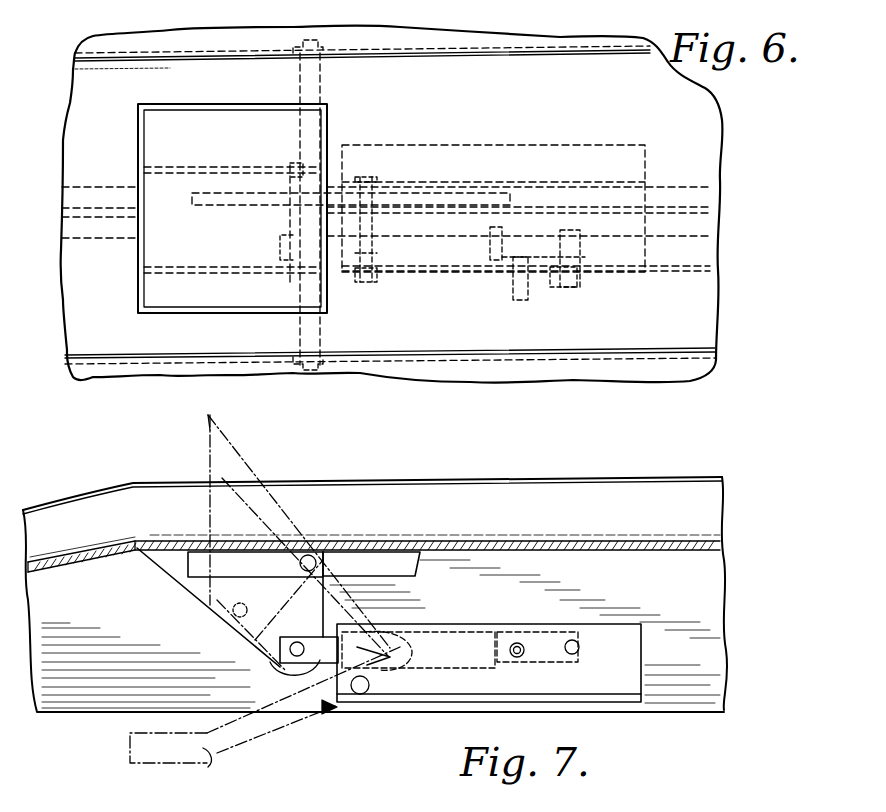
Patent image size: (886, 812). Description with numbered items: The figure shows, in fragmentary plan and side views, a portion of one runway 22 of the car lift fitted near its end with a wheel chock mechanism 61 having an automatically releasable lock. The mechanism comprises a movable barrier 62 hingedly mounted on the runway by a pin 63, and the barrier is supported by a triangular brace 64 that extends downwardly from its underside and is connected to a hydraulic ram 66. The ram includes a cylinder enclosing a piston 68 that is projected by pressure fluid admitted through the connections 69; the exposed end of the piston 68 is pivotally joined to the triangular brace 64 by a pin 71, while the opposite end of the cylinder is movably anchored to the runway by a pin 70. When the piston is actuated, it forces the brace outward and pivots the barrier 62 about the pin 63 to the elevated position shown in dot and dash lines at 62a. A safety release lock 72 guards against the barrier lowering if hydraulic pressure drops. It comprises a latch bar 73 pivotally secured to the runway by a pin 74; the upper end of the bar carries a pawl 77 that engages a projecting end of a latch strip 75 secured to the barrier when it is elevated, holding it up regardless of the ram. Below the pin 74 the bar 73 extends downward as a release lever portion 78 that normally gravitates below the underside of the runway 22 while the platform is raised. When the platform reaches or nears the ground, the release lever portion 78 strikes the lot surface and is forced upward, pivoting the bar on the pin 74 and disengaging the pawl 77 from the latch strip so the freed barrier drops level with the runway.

In FIG. 6, the runway 22 is at (490, 338).
In FIG. 7, the runway 22 is at (560, 540).
In FIG. 6, the wheel chock mechanism 61 is at (277, 324).
In FIG. 7, the wheel chock mechanism 61 is at (157, 572).
In FIG. 6, the movable barrier 62 is at (210, 120).
In FIG. 7, the movable barrier 62 is at (228, 547).
In FIG. 7, the elevated position of barrier 62a is at (245, 453).
In FIG. 6, the pin 63 is at (323, 80).
In FIG. 7, the pin 63 is at (315, 556).
In FIG. 7, the triangular brace 64 is at (203, 598).
In FIG. 6, the hydraulic ram 66 is at (423, 267).
In FIG. 6, the piston 68 is at (330, 260).
In FIG. 7, the piston 68 is at (460, 628).
In FIG. 6, the connections 69 is at (528, 290).
In FIG. 7, the connections 69 is at (525, 643).
In FIG. 6, the pin 70 is at (573, 257).
In FIG. 7, the pin 70 is at (580, 652).
In FIG. 6, the pin 71 is at (280, 245).
In FIG. 7, the pin 71 is at (283, 665).
In FIG. 7, the safety release lock 72 is at (278, 730).
In FIG. 7, the latch bar 73 is at (337, 722).
In FIG. 6, the pin 74 is at (372, 178).
In FIG. 7, the pin 74 is at (370, 685).
In FIG. 7, the latch strip 75 is at (387, 562).
In FIG. 7, the pawl 77 is at (433, 630).
In FIG. 7, the release lever portion 78 is at (213, 762).